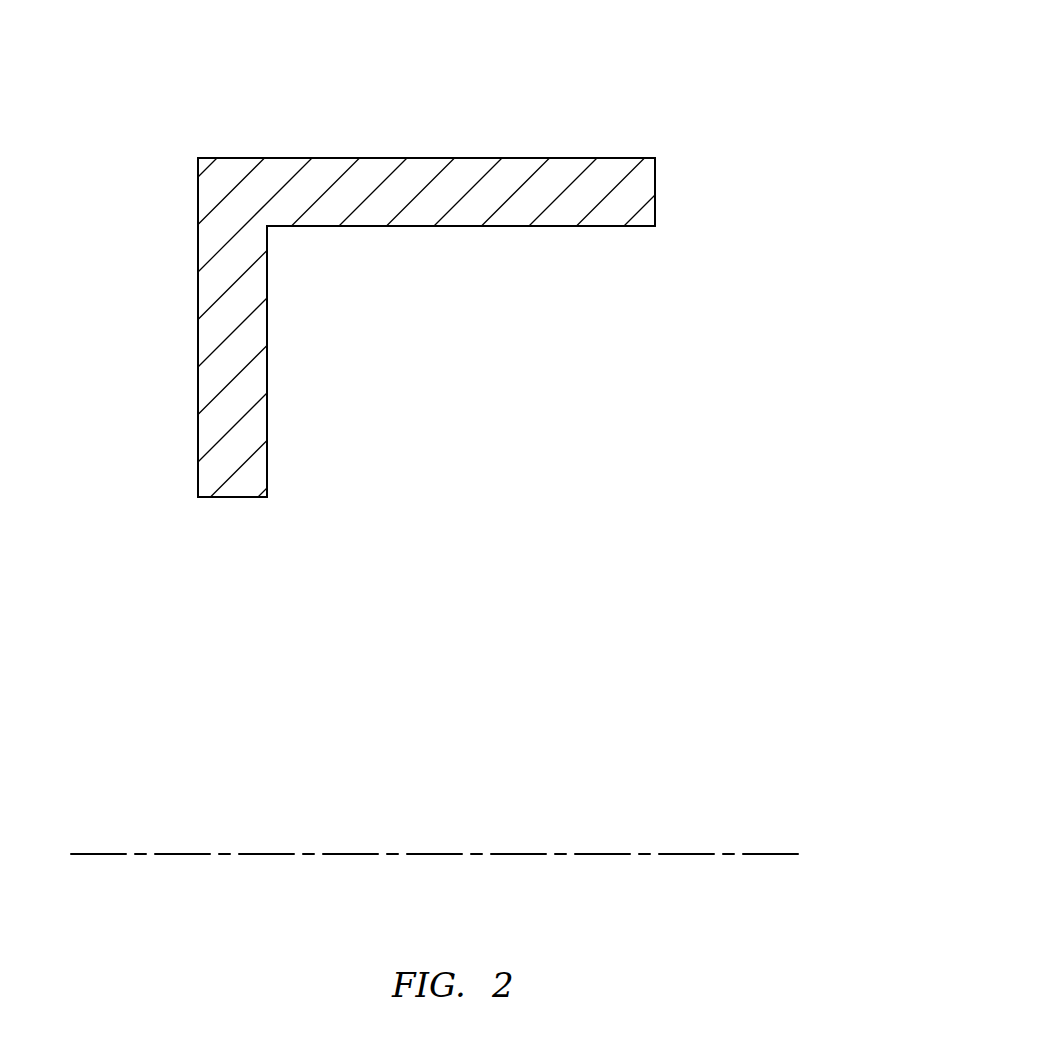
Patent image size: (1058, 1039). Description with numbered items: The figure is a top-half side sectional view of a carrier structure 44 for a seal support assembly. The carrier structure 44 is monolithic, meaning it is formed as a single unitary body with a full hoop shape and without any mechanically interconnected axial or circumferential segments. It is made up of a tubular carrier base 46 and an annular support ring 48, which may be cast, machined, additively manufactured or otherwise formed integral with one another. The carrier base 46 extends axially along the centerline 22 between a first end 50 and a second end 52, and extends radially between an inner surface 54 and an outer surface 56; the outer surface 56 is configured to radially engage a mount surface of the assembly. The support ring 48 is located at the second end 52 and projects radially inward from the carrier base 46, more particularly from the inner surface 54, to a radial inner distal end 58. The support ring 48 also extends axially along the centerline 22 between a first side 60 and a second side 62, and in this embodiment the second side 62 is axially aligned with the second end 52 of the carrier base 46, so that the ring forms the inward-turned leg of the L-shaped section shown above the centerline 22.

The carrier structure 44 is at (650, 78).
The carrier base 46 is at (446, 150).
The support ring 48 is at (190, 376).
The first end 50 is at (655, 185).
The second end 52 is at (198, 201).
The inner surface 54 is at (618, 227).
The outer surface 56 is at (628, 158).
The radial inner distal end 58 is at (236, 497).
The first side 60 is at (267, 432).
The second side 62 is at (198, 446).
The centerline 22 is at (767, 853).